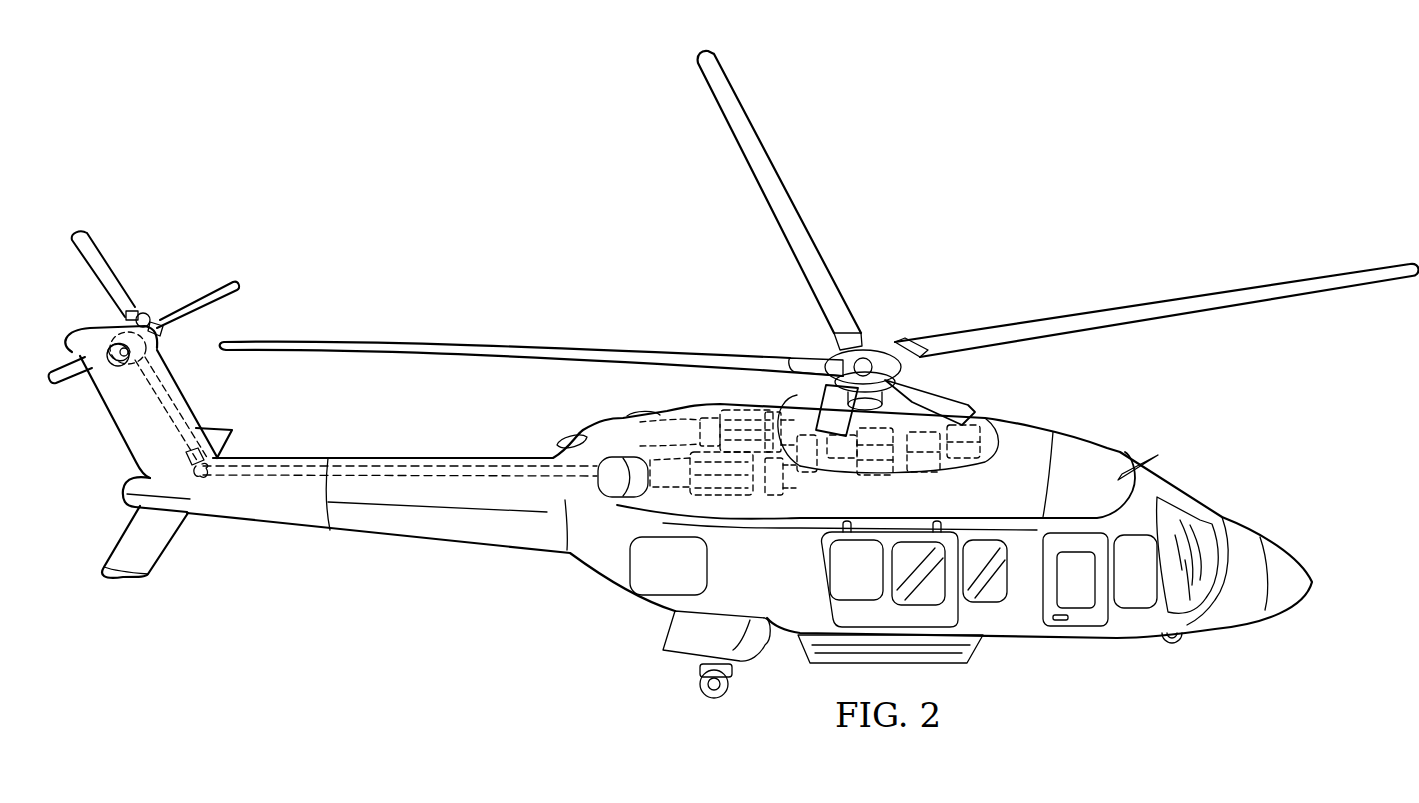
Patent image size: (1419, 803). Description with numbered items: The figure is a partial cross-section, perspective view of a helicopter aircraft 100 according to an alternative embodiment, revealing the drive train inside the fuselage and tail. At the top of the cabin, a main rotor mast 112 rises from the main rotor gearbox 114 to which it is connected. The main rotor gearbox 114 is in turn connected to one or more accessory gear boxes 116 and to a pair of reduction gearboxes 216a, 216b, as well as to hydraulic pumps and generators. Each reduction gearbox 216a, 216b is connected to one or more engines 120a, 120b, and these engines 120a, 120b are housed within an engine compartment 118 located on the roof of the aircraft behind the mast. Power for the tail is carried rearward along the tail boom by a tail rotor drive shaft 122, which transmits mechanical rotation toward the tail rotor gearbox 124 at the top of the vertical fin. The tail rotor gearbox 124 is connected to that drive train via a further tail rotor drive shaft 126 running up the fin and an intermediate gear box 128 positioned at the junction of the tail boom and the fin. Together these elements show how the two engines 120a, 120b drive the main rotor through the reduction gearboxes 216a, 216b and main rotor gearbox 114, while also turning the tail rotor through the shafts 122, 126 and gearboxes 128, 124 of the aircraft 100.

The aircraft 100 is at (734, 369).
The main rotor mast 112 is at (837, 478).
The main rotor gearbox 114 is at (873, 467).
The accessory gear box 116 is at (966, 460).
The engine compartment 118 is at (787, 428).
The engine 120a is at (717, 487).
The engine 120b is at (728, 408).
The tail rotor drive shaft 122 is at (417, 464).
The tail rotor gearbox 124 is at (110, 325).
The tail rotor drive shaft 126 is at (185, 392).
The intermediate gear box 128 is at (198, 483).
The reduction gearbox 216a is at (775, 490).
The reduction gearbox 216b is at (768, 406).